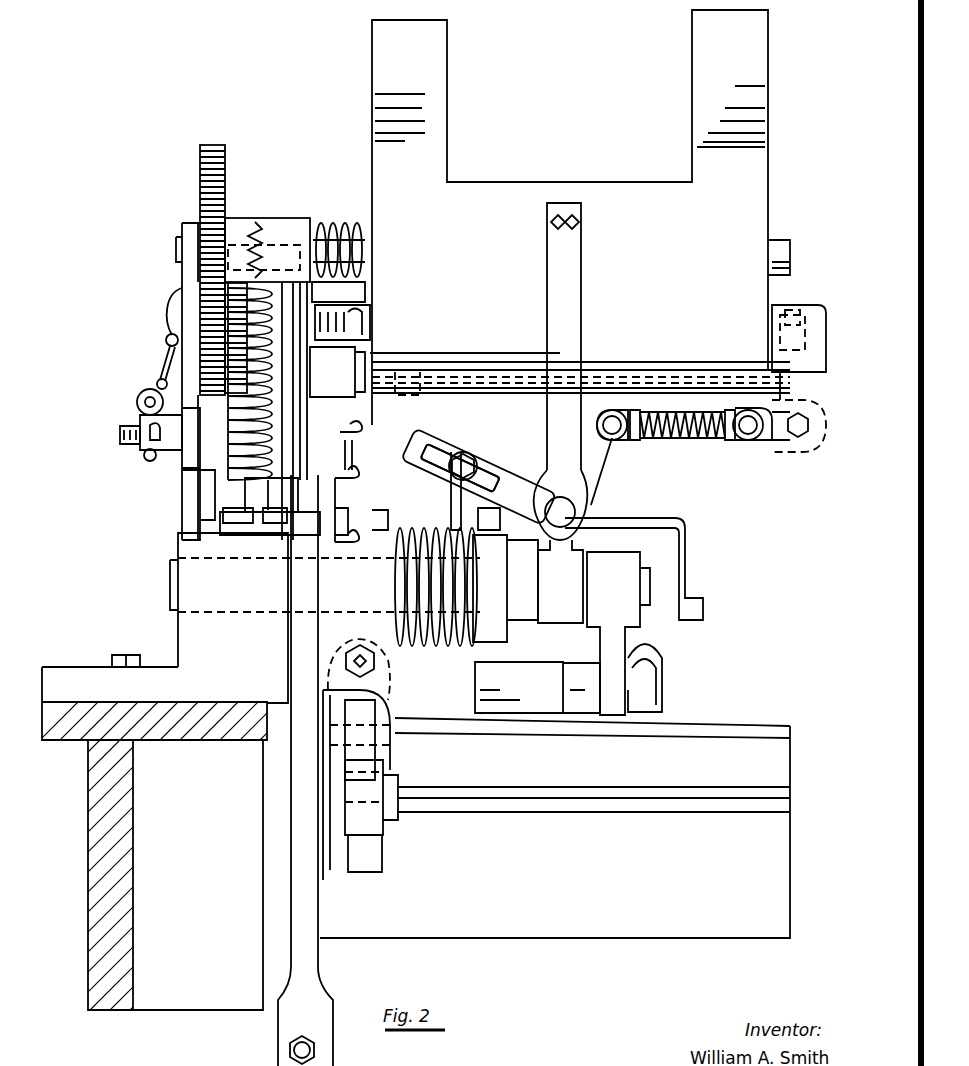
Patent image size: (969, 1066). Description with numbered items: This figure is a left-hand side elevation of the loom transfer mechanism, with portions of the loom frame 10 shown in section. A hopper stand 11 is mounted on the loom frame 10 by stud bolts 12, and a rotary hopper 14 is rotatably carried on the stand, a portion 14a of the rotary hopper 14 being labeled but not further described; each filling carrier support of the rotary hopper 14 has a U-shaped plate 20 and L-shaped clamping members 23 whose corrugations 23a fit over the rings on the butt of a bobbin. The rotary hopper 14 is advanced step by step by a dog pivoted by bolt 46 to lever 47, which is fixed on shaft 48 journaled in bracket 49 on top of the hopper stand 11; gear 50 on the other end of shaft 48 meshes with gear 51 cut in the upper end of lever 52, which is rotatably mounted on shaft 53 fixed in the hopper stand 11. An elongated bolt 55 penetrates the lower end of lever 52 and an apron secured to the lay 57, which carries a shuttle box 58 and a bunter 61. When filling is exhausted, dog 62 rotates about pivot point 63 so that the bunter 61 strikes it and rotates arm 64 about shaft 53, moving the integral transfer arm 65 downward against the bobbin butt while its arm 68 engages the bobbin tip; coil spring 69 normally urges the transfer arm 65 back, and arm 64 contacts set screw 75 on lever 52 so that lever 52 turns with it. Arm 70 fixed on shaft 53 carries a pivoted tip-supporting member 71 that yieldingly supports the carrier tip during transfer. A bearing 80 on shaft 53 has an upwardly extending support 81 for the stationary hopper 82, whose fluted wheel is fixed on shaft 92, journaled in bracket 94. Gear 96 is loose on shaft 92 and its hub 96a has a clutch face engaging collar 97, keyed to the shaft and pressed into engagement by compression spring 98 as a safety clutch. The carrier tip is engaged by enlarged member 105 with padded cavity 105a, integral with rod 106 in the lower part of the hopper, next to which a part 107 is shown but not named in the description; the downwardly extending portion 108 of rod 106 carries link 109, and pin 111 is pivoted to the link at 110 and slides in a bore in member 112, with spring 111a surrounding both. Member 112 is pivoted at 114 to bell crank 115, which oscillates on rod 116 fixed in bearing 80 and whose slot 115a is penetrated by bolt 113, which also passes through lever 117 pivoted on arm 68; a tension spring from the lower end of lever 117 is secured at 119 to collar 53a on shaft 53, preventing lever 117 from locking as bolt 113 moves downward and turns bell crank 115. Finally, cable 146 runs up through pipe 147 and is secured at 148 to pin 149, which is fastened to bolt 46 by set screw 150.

The loom frame 10 is at (133, 795).
The hopper stand 11 is at (178, 626).
The stud bolts 12 is at (130, 655).
The rotary hopper 14 is at (272, 415).
The screw collar 14a is at (271, 495).
The U-shaped plate 20 is at (342, 444).
The clamping member 23 is at (378, 328).
The corrugations 23a is at (352, 318).
The bolt 46 is at (138, 412).
The lever 47 is at (180, 472).
The shaft 48 is at (180, 497).
The bracket 49 is at (245, 528).
The gear 50 is at (332, 476).
The gear 51 is at (347, 523).
The lever 52 is at (318, 952).
The shaft 53 is at (170, 580).
The collar 53a is at (535, 624).
The elongated bolt 55 is at (290, 1052).
The lay 57 is at (607, 932).
The shuttle box 58 is at (736, 730).
The bunter 61 is at (398, 822).
The dog 62 is at (382, 858).
The pivot point 63 is at (385, 742).
The arm 64 is at (388, 712).
The transfer arm 65 is at (372, 516).
The extension arm 68 is at (655, 520).
The coil spring 69 is at (395, 580).
The arm 70 is at (618, 633).
The tip-supporting member 71 is at (658, 660).
The set screw 75 is at (345, 658).
The bearing 80 is at (595, 500).
The support 81 is at (581, 292).
The stationary hopper 82 is at (372, 122).
The shaft 92 is at (790, 262).
The bracket 94 is at (186, 224).
The gear 96 is at (212, 146).
The hub 96a is at (240, 220).
The collar 97 is at (287, 220).
The compression spring 98 is at (338, 216).
The enlarged member 105 is at (805, 310).
The cavity 105a is at (782, 305).
The rod 106 is at (625, 368).
The key 107 is at (390, 395).
The downwardly extending portion 108 is at (800, 452).
The link 109 is at (765, 450).
The pivot 110 is at (742, 442).
The pin 111 is at (700, 440).
The spring 111a is at (684, 440).
The member 112 is at (628, 440).
The bolt 113 is at (460, 452).
The pivot 114 is at (604, 440).
The bell crank 115 is at (540, 470).
The slot 115a is at (487, 458).
The rod 116 is at (562, 512).
The lever 117 is at (450, 492).
The spring securing point 119 is at (478, 515).
The cable 146 is at (166, 342).
The pipe 147 is at (170, 326).
The cable securing point 148 is at (156, 386).
The pin 149 is at (144, 458).
The set screw 150 is at (120, 432).